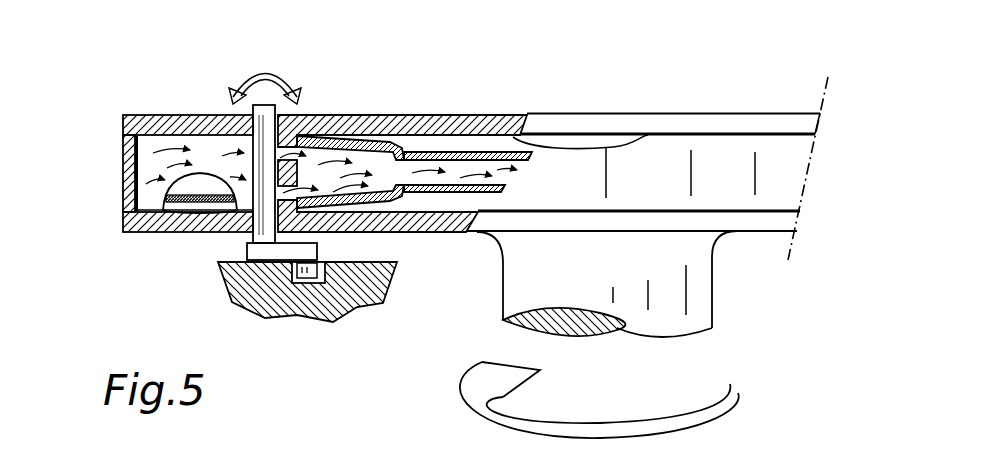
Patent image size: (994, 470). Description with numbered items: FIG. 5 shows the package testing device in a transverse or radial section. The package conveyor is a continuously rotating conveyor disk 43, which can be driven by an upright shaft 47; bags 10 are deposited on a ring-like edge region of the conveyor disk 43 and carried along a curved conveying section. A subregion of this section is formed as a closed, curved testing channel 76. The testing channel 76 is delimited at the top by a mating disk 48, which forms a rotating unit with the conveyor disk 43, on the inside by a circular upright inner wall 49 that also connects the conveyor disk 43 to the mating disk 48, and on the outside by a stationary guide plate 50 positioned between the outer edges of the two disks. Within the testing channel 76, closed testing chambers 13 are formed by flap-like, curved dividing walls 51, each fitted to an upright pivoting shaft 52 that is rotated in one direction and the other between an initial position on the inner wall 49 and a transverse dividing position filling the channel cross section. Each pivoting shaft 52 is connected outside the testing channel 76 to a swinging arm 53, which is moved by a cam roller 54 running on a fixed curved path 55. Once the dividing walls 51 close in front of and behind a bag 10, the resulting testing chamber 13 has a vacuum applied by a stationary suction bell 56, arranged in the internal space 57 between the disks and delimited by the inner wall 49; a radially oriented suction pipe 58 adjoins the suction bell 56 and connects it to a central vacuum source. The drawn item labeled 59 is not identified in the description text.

The bag 10 is at (200, 194).
The testing chamber 13 is at (124, 206).
The conveyor disk 43 is at (163, 240).
The upright shaft 47 is at (697, 290).
The mating disk 48 is at (464, 112).
The inner wall 49 is at (296, 151).
The guide plate 50 is at (124, 190).
The dividing wall 51 is at (148, 147).
The pivoting shaft 52 is at (263, 112).
The swinging arm 53 is at (283, 252).
The cam roller 54 is at (333, 316).
The curved path 55 is at (390, 305).
The suction bell 56 is at (415, 117).
The internal space 57 is at (491, 150).
The suction pipe 58 is at (648, 136).
The nozzle 59 is at (297, 190).
The testing channel 76 is at (134, 152).